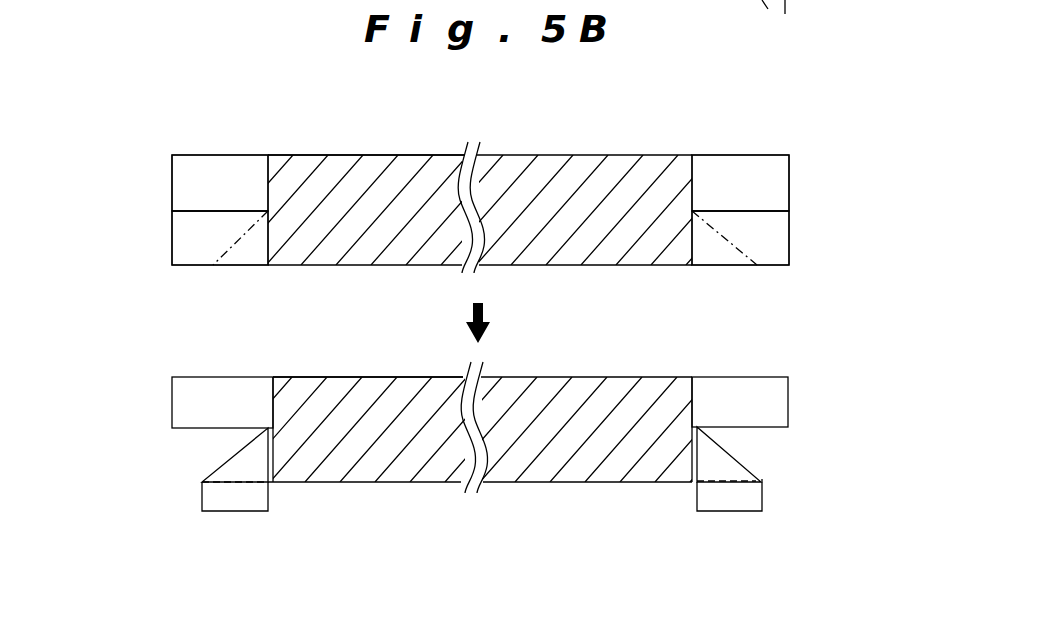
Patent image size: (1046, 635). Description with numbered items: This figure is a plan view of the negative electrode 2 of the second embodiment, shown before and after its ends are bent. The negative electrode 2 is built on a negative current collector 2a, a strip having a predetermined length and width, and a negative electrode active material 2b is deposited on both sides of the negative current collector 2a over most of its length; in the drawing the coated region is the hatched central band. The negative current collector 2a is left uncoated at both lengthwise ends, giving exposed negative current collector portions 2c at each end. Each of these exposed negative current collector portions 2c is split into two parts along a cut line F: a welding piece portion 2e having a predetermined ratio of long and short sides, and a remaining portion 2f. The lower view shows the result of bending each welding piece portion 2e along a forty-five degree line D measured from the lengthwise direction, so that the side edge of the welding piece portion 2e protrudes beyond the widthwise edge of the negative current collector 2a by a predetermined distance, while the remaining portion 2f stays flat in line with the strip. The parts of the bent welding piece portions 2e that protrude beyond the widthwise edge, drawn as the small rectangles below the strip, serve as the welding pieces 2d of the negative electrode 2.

The negative electrode 2 is at (654, 521).
The negative current collector 2a is at (401, 146).
The negative electrode active material 2b is at (580, 180).
The exposed negative current collector portions 2c is at (86, 147).
The welding pieces 2d is at (242, 497).
The welding piece portion 2e is at (173, 238).
The remaining portion 2f is at (178, 176).
The cut line F is at (228, 211).
The 45° lines D is at (245, 233).